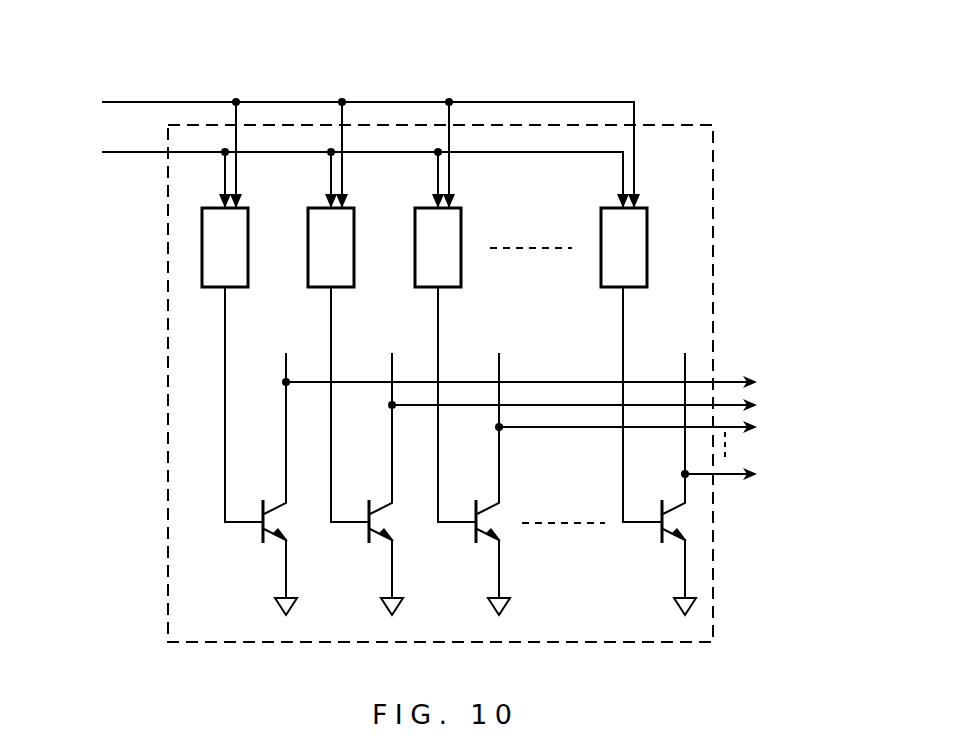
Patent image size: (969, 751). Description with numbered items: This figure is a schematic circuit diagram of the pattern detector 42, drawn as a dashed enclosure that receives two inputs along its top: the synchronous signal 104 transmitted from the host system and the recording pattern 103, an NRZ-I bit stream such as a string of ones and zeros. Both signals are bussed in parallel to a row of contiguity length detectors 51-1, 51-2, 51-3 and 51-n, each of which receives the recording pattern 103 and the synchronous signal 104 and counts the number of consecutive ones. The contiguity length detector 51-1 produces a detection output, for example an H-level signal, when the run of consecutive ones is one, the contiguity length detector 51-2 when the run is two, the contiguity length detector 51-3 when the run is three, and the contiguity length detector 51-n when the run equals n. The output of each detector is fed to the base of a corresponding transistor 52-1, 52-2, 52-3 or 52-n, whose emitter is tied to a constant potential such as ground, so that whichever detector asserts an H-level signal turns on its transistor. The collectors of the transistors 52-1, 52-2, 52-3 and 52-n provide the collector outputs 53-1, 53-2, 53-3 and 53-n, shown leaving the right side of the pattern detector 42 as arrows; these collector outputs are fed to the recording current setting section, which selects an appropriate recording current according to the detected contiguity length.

The pattern detector 42 is at (713, 140).
The synchronous signal 104 is at (126, 100).
The recording pattern 103 is at (112, 156).
The contiguity length detector 51-1 is at (248, 220).
The contiguity length detector 51-2 is at (354, 220).
The contiguity length detector 51-3 is at (461, 220).
The contiguity length detector 51-n is at (647, 220).
The transistor 52-1 is at (261, 550).
The transistor 52-2 is at (368, 550).
The transistor 52-3 is at (475, 550).
The transistor 52-n is at (661, 550).
The collector output 53-1 is at (717, 383).
The collector output 53-2 is at (718, 405).
The collector output 53-3 is at (718, 427).
The collector output 53-n is at (718, 474).